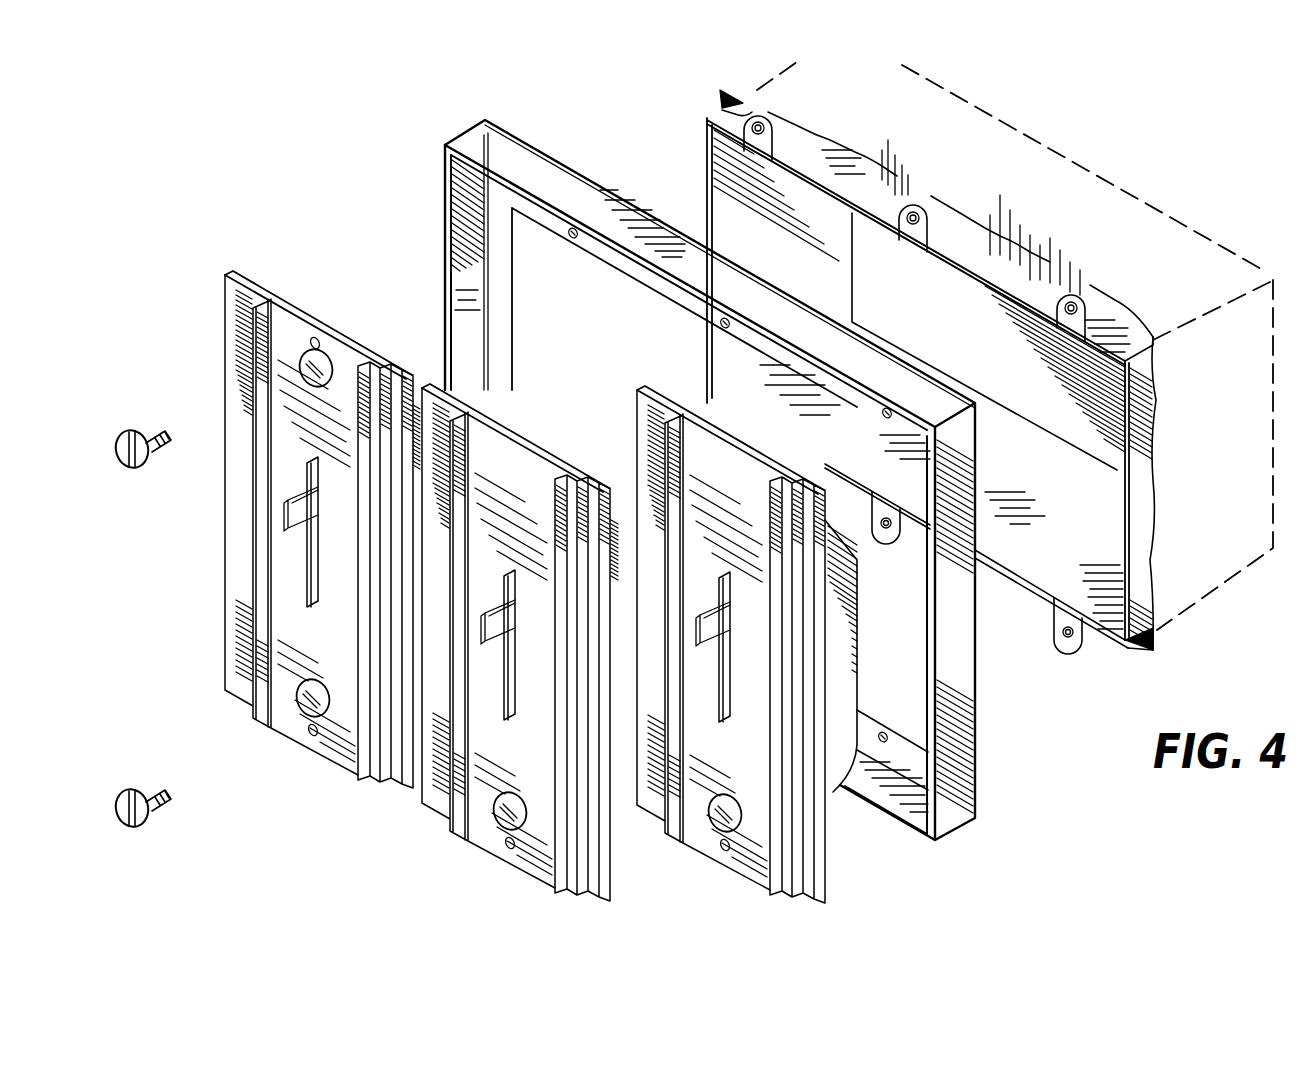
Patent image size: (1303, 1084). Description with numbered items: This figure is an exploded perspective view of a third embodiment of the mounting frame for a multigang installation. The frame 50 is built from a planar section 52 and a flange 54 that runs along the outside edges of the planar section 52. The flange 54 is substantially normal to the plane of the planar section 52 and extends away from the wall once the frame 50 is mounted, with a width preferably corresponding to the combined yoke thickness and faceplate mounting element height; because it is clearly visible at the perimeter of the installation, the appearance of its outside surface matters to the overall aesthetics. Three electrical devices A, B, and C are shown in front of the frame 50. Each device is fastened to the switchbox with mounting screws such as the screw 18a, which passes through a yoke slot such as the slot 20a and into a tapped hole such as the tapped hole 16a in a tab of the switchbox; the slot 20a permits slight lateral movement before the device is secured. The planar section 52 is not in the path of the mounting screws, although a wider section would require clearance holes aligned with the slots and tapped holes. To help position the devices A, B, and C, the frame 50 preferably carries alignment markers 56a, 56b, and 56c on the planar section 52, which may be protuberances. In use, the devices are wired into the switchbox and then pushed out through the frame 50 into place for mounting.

The tapped hole 16a is at (780, 122).
The screw 18a is at (120, 438).
The slot 20a is at (328, 362).
The frame 50 is at (978, 793).
The planar section 52 is at (867, 730).
The flange 54 is at (973, 717).
The alignment marker 56a is at (574, 240).
The alignment marker 56b is at (718, 326).
The alignment marker 56c is at (884, 416).
The device A is at (329, 752).
The device B is at (488, 853).
The device C is at (723, 861).